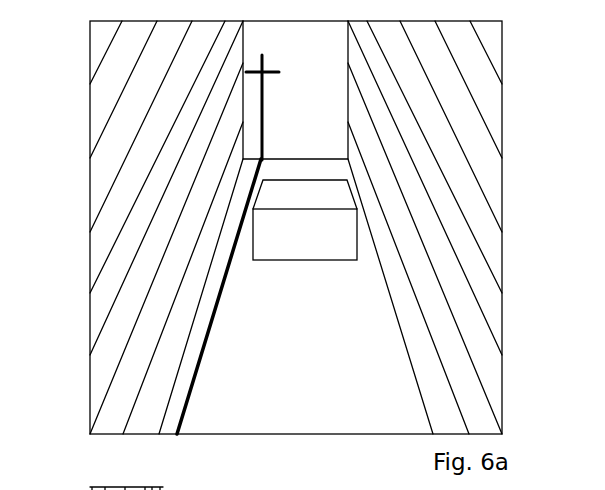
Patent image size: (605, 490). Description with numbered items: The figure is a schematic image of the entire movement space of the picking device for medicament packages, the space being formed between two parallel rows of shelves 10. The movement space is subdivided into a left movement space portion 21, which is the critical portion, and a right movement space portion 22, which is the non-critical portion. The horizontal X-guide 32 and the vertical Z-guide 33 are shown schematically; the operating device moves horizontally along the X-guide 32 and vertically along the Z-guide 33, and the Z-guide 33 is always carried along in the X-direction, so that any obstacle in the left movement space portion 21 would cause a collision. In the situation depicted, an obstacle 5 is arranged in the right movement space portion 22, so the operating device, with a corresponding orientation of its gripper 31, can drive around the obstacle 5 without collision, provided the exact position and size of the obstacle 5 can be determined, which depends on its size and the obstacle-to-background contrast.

The shelves 10 is at (468, 90).
The obstacle 5 is at (303, 235).
The left movement space portion 21 is at (232, 225).
The right movement space portion 22 is at (330, 365).
The gripper 31 is at (246, 72).
The X-guide 32 is at (213, 308).
The Z-guide 33 is at (261, 122).